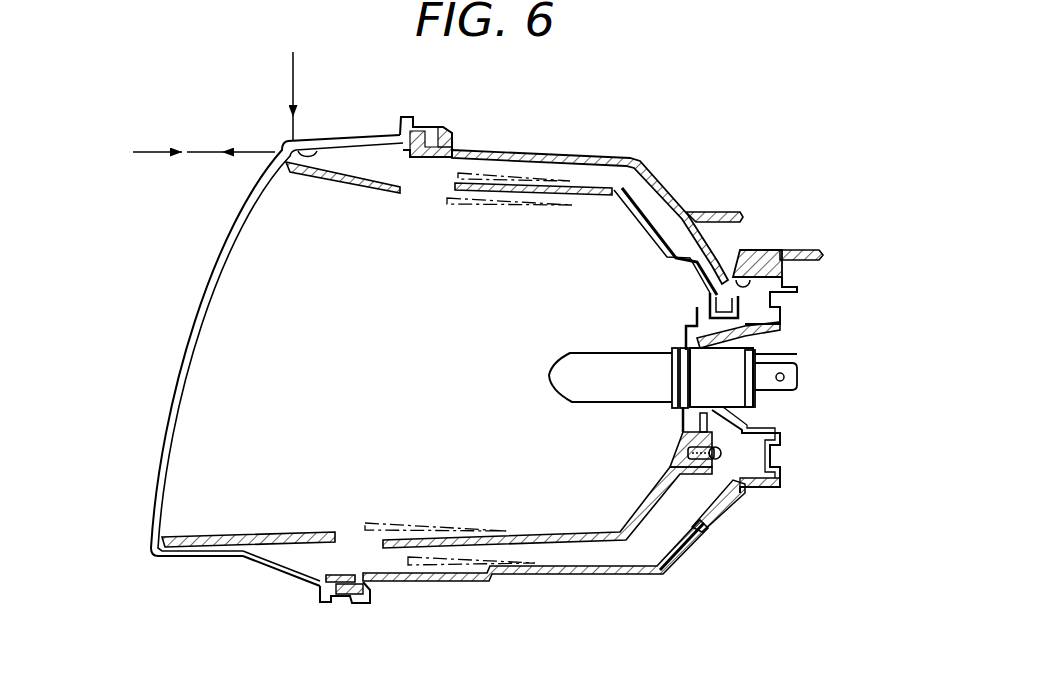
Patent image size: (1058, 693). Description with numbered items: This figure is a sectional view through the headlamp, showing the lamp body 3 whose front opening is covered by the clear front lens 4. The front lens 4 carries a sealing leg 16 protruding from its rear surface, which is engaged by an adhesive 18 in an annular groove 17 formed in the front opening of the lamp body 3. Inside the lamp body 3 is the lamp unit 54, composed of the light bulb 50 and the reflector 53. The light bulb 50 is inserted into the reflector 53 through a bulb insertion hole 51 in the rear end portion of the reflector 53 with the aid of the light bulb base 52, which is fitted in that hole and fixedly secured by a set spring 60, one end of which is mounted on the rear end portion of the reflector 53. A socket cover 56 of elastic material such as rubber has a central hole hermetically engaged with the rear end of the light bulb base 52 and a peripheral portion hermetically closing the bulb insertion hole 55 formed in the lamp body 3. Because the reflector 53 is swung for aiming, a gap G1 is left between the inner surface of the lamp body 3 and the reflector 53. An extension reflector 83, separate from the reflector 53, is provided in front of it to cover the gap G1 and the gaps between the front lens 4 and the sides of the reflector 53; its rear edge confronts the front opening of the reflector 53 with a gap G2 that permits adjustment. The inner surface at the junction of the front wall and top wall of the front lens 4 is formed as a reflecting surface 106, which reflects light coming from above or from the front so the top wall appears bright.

The lamp body 3 is at (481, 149).
The front lens 4 is at (149, 551).
The sealing leg 16 is at (257, 565).
The annular groove 17 is at (325, 578).
The adhesive 18 is at (353, 606).
The light bulb 50 is at (580, 357).
The bulb insertion hole 51 is at (704, 300).
The light bulb base 52 is at (738, 398).
The reflector 53 is at (592, 182).
The lamp unit 54 is at (647, 211).
The bulb insertion hole 55 is at (750, 250).
The socket cover 56 is at (783, 267).
The set spring 60 is at (780, 324).
The extension reflector 83 is at (364, 173).
The reflecting surface 106 is at (312, 150).
The gap G1 is at (387, 562).
The gap G2 is at (347, 537).